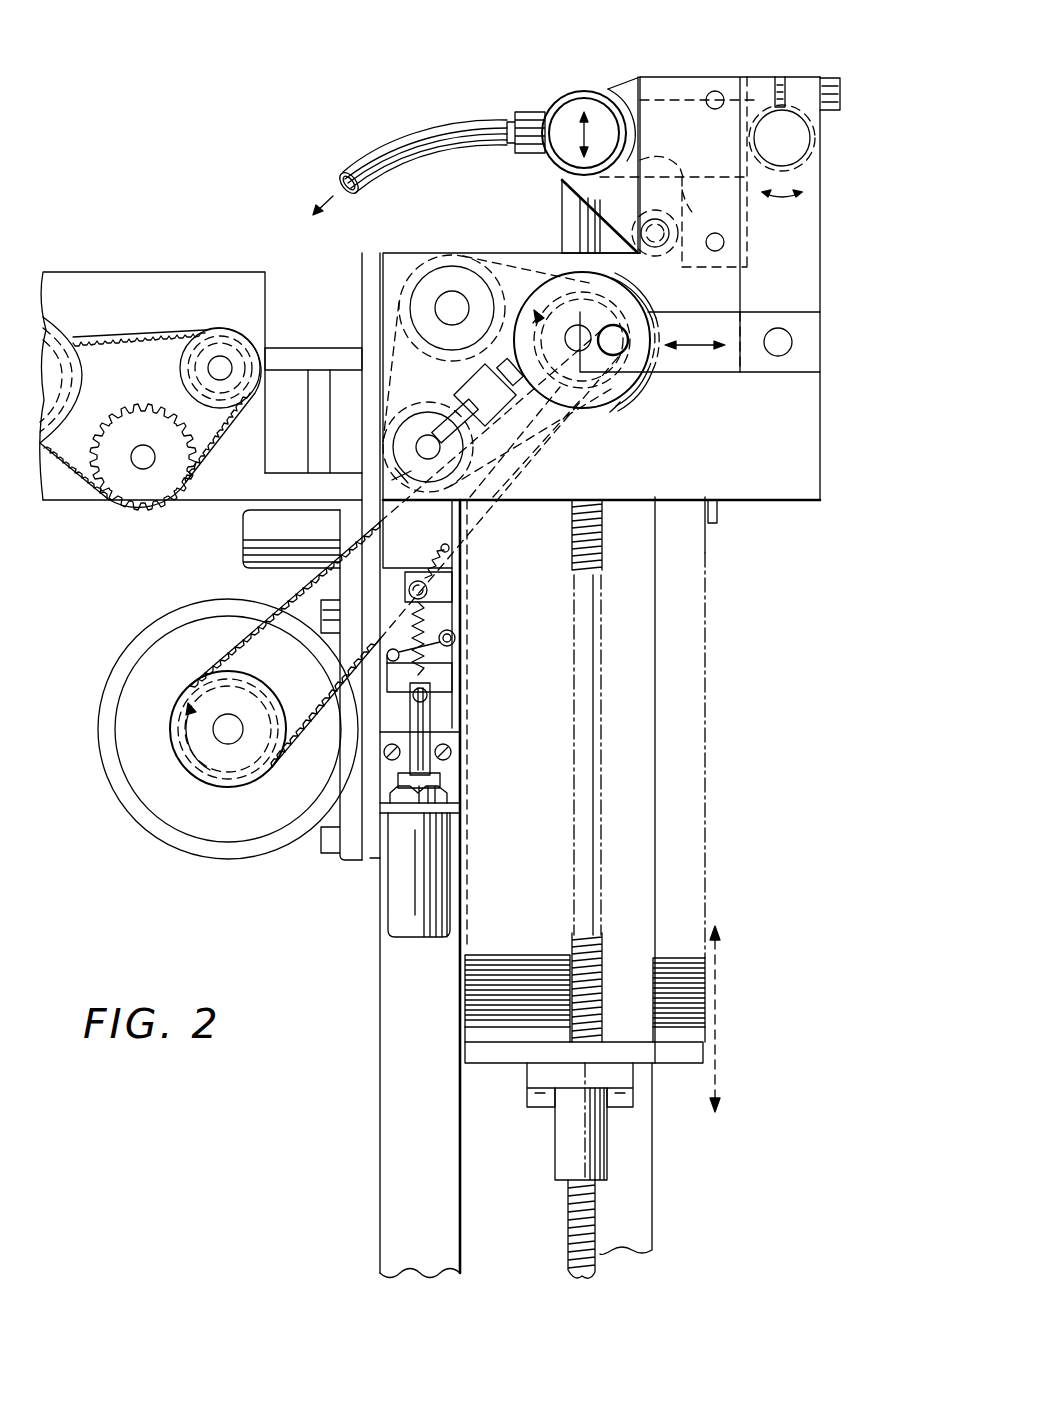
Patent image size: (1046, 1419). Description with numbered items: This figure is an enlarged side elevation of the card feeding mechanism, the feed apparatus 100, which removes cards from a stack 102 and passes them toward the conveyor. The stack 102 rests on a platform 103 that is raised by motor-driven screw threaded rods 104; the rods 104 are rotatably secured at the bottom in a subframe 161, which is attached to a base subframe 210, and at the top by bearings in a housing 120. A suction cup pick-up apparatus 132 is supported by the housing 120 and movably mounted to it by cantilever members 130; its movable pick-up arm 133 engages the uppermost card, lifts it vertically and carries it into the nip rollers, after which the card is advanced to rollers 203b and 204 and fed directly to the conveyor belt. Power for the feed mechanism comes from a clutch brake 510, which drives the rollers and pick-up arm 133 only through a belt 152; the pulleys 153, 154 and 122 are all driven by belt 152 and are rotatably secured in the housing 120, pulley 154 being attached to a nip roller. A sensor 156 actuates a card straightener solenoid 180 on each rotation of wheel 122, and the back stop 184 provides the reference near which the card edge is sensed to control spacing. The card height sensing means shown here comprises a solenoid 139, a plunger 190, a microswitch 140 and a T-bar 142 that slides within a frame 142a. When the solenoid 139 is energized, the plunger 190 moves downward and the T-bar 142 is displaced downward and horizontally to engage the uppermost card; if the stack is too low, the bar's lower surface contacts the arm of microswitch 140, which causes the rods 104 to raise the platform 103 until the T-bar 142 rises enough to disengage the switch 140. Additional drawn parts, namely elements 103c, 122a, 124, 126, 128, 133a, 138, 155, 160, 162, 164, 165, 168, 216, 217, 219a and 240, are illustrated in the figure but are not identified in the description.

The feed apparatus 100 is at (706, 76).
The stack of cards 102 is at (710, 612).
The platform 103 is at (520, 1060).
The nut 103c is at (695, 1035).
The threaded rods 104 is at (600, 1262).
The housing 120 is at (805, 412).
The pulley 122 is at (598, 410).
The pulley rim 122a is at (632, 390).
The slide block 124 is at (720, 366).
The support arm 126 is at (812, 212).
The pivot bore 128 is at (805, 138).
The cantilever members 130 is at (618, 100).
The suction cup pick-up apparatus 132 is at (579, 97).
The suction cup pick-up arm 133 is at (578, 212).
The vacuum fitting 133a is at (560, 118).
The spring 138 is at (470, 642).
The solenoid 139 is at (395, 910).
The microswitch 140 is at (446, 684).
The T-bar 142 is at (446, 586).
The frame 142a is at (460, 534).
The belt 152 is at (305, 610).
The pulley 153 is at (640, 303).
The pulley 154 is at (470, 256).
The tension pulley 155 is at (432, 404).
The sensor 156 is at (500, 406).
The bracket 160 is at (750, 245).
The subframe 161 is at (392, 1165).
The diagonal brace 162 is at (570, 202).
The pivot pin 164 is at (642, 222).
The support column 165 is at (640, 1206).
The cam slot 168 is at (688, 180).
The card straightener solenoid 180 is at (248, 544).
The back stop 184 is at (432, 135).
The plunger 190 is at (430, 716).
The roller 203b is at (218, 332).
The roller 204 is at (80, 362).
The subframe 210 is at (80, 500).
The timing belt 216 is at (128, 336).
The drive gear 217 is at (134, 410).
The support bar 219a is at (330, 358).
The feed housing 240 is at (205, 282).
The clutch brake 510 is at (178, 836).